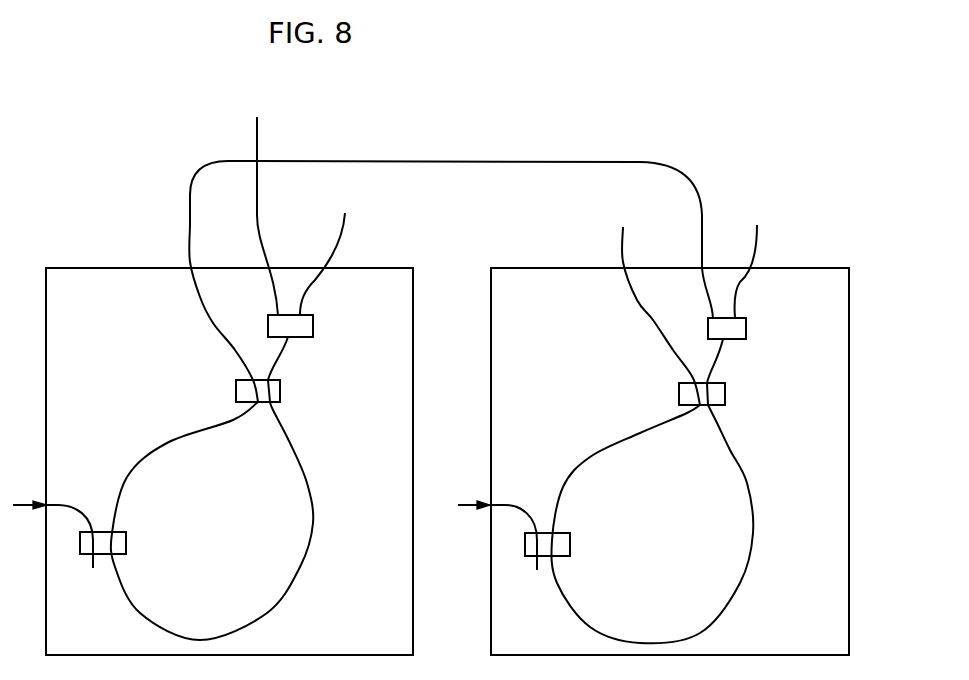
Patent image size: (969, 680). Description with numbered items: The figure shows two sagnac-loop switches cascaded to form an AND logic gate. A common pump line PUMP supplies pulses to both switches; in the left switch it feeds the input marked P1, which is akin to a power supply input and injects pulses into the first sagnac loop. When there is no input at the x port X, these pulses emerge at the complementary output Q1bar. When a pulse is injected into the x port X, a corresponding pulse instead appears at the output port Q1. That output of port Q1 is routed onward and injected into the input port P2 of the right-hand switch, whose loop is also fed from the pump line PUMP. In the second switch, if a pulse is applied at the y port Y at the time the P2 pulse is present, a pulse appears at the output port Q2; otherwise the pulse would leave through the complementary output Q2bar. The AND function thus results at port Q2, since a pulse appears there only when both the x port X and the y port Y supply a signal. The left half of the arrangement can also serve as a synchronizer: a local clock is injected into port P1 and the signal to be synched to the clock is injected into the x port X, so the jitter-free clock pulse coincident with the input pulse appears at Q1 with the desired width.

The pump input PUMP is at (446, 191).
The input port P1 is at (285, 308).
The output port Q1 is at (212, 424).
The output Q1-bar Q1bar is at (385, 207).
The x port X is at (63, 520).
The input port P2 is at (709, 322).
The output port Q2 is at (652, 427).
The output Q2-bar Q2bar is at (868, 208).
The y port Y is at (507, 525).